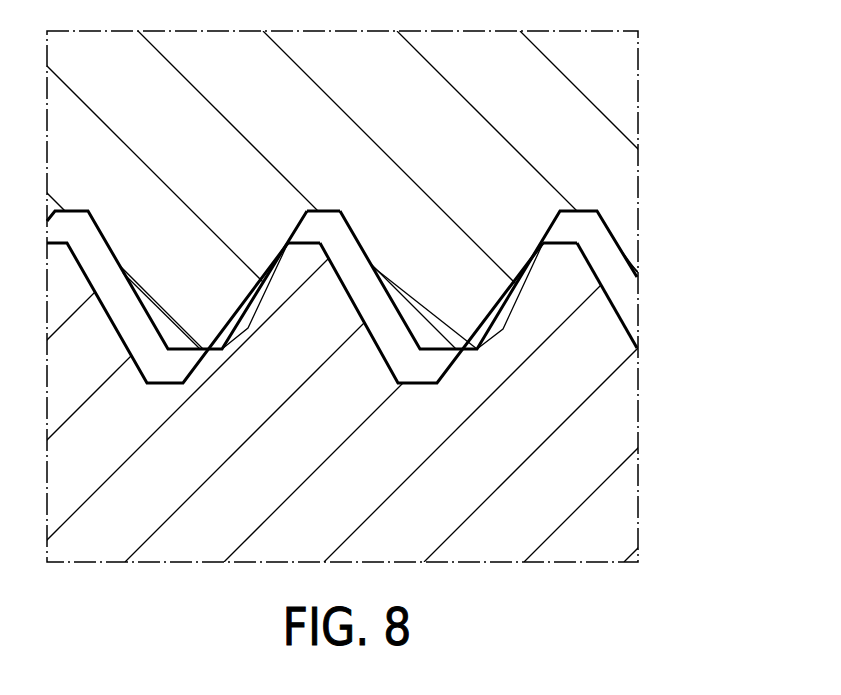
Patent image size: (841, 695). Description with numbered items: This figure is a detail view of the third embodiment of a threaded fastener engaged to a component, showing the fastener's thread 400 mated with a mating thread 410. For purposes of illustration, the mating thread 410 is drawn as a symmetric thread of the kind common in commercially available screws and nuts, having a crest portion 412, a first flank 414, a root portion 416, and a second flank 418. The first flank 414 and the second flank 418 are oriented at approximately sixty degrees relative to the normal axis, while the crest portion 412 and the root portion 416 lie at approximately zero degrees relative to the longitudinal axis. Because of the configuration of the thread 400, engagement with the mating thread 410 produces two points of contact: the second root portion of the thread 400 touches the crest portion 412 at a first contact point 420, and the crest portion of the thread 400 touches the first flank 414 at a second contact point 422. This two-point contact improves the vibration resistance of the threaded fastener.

The thread 400 is at (617, 523).
The mating thread 410 is at (412, 120).
The crest portion 412 is at (182, 348).
The first flank 414 is at (250, 302).
The root portion 416 is at (325, 210).
The second flank 418 is at (387, 287).
The first contact point 420 is at (223, 350).
The second contact point 422 is at (287, 243).